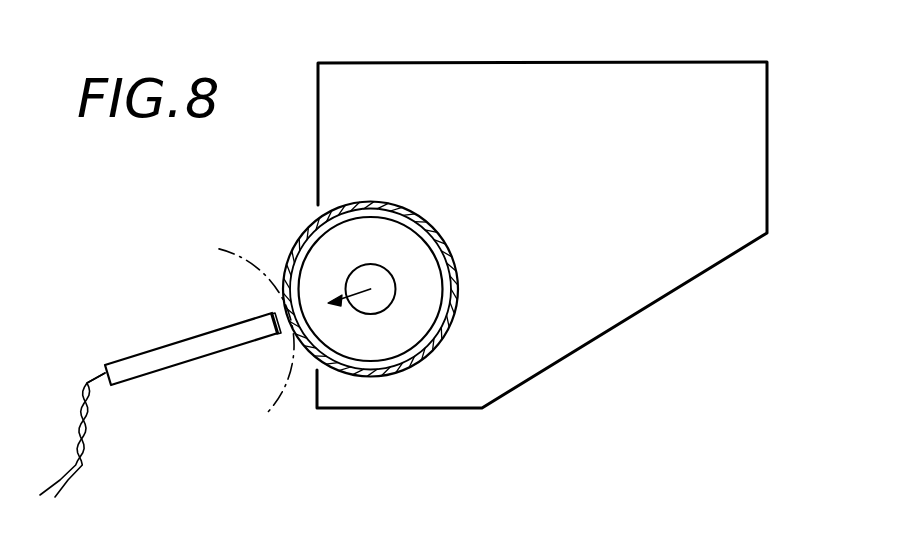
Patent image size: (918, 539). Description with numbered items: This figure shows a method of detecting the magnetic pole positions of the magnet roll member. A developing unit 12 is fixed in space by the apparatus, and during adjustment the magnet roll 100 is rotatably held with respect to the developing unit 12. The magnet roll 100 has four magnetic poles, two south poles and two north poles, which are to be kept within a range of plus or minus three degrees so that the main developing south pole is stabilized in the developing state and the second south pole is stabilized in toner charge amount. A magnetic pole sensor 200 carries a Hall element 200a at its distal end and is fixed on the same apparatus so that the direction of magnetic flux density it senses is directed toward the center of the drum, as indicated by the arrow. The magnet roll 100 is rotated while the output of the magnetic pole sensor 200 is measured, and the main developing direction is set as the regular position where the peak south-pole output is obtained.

The developing unit 12 is at (514, 78).
The magnet roll member 100 is at (428, 346).
The magnetic pole sensor 200 is at (203, 348).
The Hall element 200a is at (283, 333).